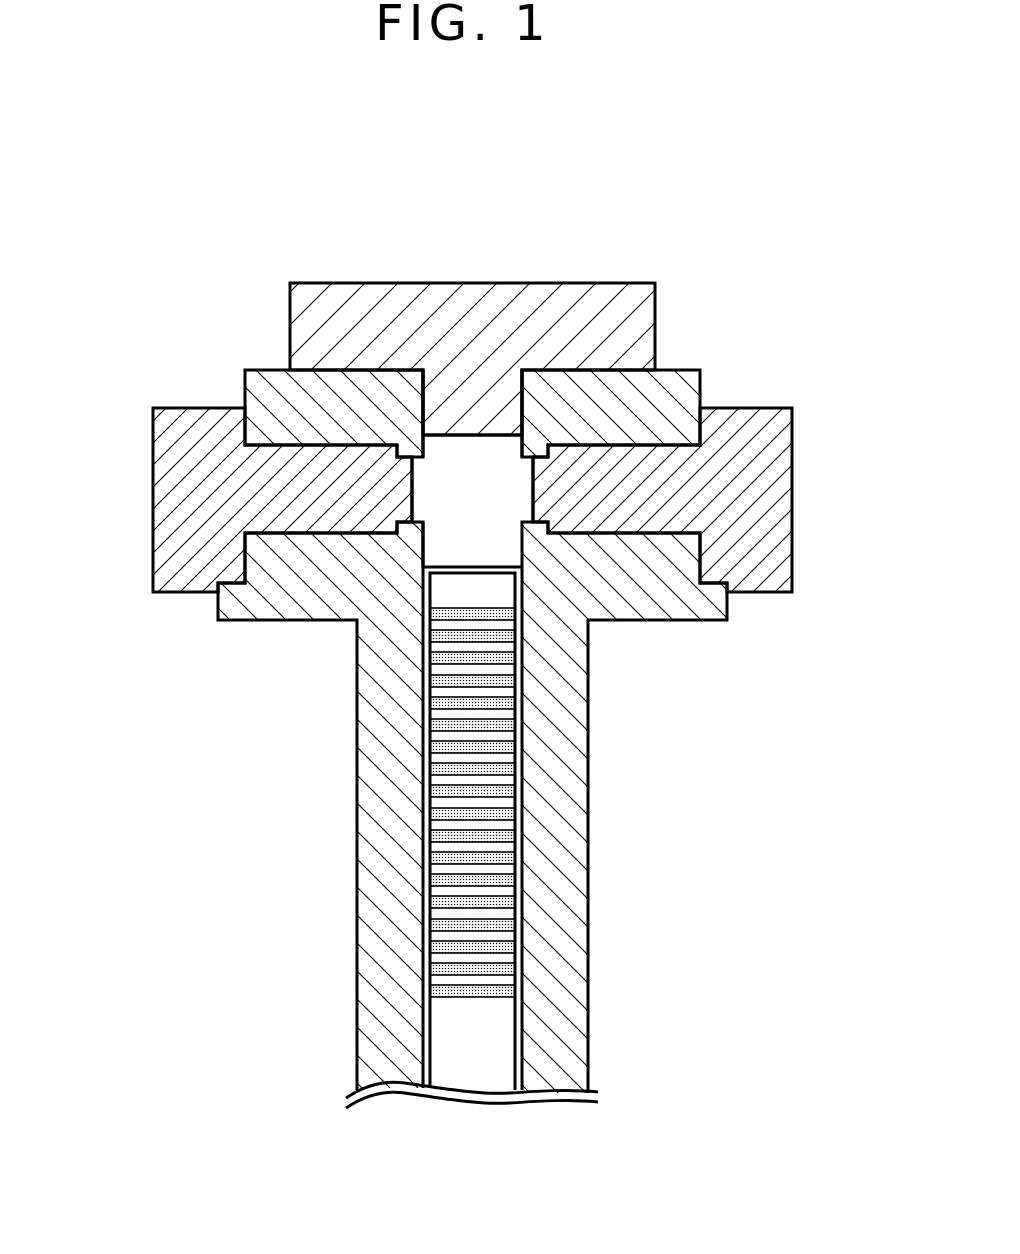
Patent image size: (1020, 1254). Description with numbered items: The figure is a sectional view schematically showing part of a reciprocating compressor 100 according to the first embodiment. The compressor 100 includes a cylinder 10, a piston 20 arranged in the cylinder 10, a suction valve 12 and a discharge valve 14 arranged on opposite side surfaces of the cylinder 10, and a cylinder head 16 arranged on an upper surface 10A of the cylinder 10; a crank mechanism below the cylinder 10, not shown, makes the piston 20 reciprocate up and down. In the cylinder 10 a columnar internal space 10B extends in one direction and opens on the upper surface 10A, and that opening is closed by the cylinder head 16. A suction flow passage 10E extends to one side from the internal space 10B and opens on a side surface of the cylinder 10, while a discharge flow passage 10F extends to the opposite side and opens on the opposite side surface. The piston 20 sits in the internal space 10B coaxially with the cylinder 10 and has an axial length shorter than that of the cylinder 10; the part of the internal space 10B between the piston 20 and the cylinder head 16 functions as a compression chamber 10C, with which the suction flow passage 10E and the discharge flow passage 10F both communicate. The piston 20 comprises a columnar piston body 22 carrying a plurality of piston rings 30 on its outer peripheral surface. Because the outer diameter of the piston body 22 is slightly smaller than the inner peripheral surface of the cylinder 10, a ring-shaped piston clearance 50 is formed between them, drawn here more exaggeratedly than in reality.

The compressor 100 is at (222, 219).
The cylinder 10 is at (357, 758).
The upper surface 10A is at (357, 365).
The internal space 10B is at (493, 450).
The compression chamber 10C is at (472, 495).
The suction flow passage 10E is at (525, 484).
The discharge flow passage 10F is at (420, 484).
The suction valve 12 is at (752, 408).
The discharge valve 14 is at (193, 408).
The cylinder head 16 is at (603, 284).
The piston 20 is at (577, 828).
The piston body 22 is at (490, 1030).
The piston rings 30 is at (520, 660).
The piston clearance 50 is at (427, 565).